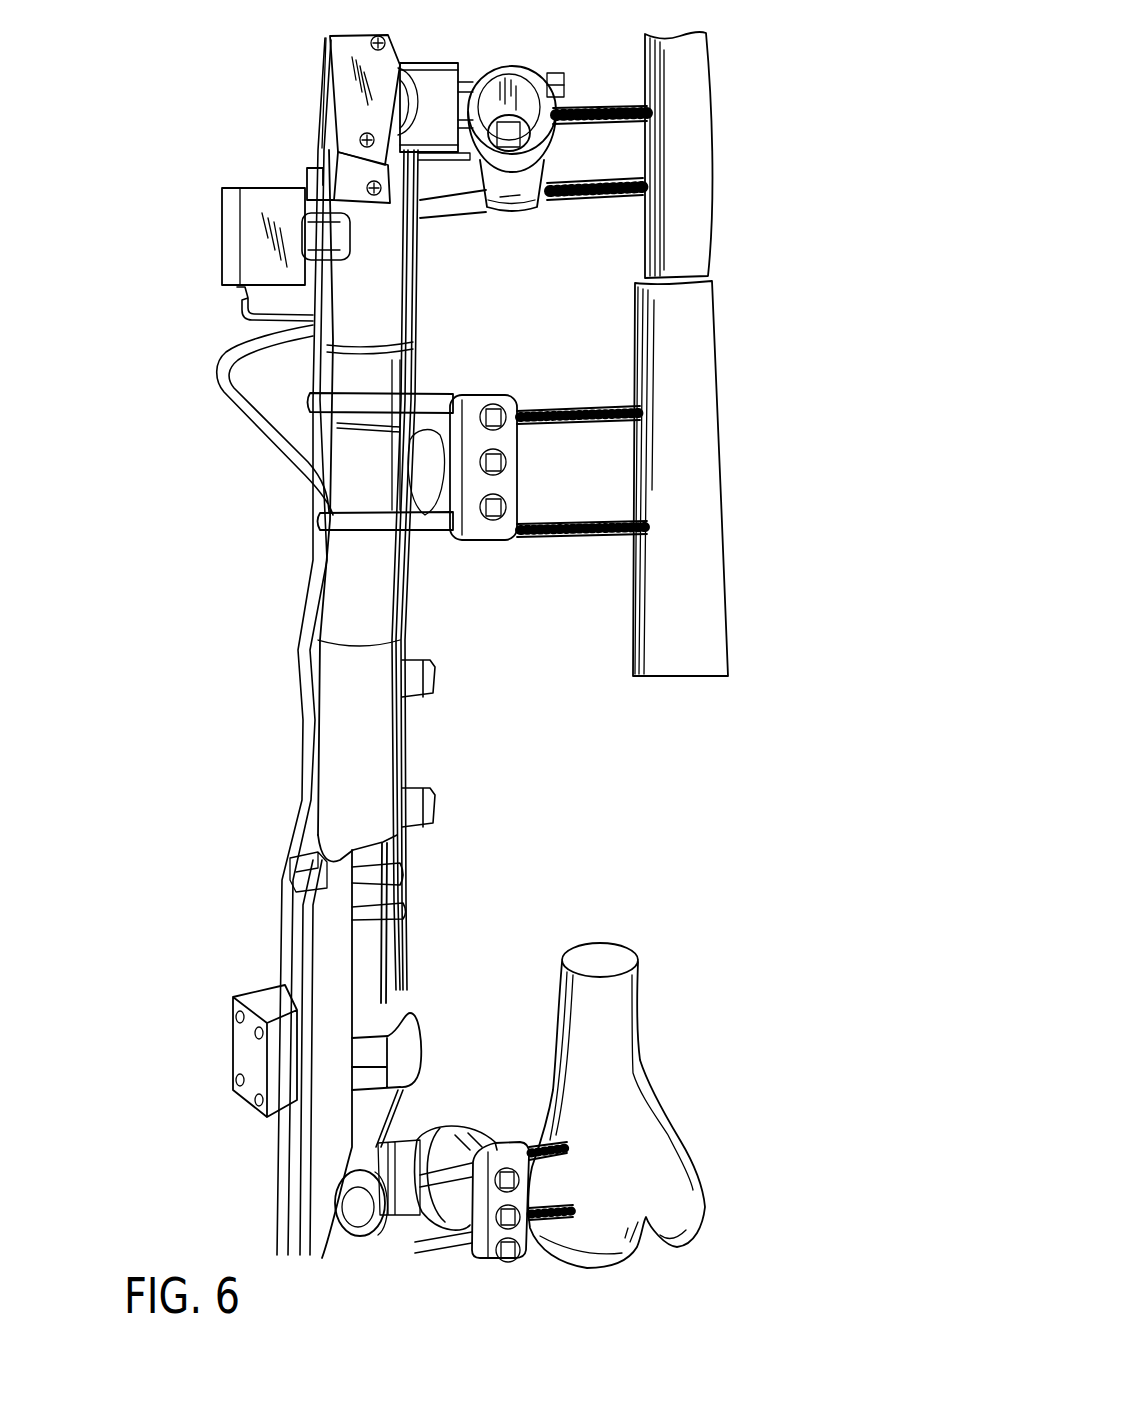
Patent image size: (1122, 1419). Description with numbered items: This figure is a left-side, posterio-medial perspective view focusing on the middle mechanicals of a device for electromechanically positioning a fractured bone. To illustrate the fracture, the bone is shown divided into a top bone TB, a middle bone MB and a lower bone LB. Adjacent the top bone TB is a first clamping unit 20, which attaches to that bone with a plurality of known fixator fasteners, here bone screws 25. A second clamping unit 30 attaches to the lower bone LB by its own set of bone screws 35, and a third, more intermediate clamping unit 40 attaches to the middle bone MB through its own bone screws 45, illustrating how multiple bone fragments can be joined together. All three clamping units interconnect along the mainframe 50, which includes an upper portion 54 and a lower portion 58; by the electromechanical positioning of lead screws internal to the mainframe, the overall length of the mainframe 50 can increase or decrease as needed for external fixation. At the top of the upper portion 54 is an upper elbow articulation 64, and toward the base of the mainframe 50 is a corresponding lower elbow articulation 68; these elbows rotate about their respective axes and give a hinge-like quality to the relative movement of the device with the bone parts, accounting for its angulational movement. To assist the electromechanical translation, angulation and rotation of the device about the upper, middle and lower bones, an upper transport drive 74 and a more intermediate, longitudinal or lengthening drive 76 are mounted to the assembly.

The first clamping unit 20 is at (508, 72).
The bone screws 25 is at (585, 108).
The second clamping unit 30 is at (443, 1127).
The bone screws 35 is at (533, 1141).
The third clamping unit 40 is at (472, 540).
The bone screws 45 is at (573, 538).
The mainframe 50 is at (290, 571).
The upper portion 54 is at (413, 303).
The lower portion 58 is at (397, 978).
The upper elbow articulation 64 is at (445, 90).
The lower elbow articulation 68 is at (387, 1236).
The upper transport drive 74 is at (228, 248).
The longitudinal or lengthening drive 76 is at (232, 1052).
The top bone TB is at (700, 204).
The middle bone MB is at (700, 470).
The lower bone LB is at (624, 1181).